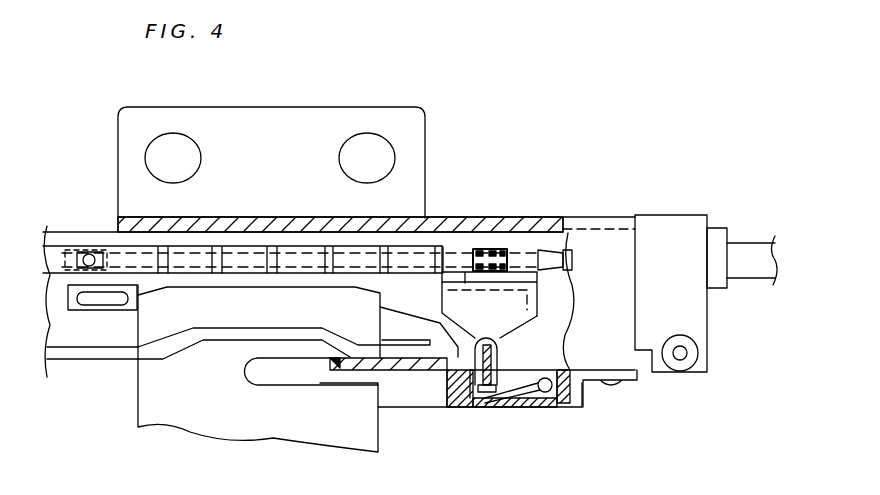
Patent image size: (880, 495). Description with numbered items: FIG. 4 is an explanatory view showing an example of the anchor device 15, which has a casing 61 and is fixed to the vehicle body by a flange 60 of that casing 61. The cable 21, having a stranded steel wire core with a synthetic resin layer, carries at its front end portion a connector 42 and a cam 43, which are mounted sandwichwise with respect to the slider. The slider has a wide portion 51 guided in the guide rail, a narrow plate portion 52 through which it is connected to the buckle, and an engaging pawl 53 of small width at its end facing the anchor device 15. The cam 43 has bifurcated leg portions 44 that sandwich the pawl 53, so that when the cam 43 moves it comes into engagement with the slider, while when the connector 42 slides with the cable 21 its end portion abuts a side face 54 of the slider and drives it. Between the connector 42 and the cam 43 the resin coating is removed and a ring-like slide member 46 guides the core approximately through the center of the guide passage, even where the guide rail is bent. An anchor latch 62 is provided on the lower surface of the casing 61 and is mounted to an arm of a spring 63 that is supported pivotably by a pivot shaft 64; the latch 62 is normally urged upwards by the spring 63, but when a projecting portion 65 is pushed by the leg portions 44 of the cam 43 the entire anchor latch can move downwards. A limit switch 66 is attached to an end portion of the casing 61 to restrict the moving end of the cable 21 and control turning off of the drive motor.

The anchor device 15 is at (461, 172).
The cable 21 is at (568, 262).
The connector 42 is at (62, 290).
The cam 43 is at (463, 257).
The bifurcated leg portions 44 is at (528, 334).
The ring-like slide member 46 is at (295, 250).
The wide portion 51 is at (168, 318).
The narrow plate portion 52 is at (200, 408).
The engaging pawl 53 is at (413, 333).
The side face 54 is at (133, 328).
The flange 60 is at (320, 118).
The casing 61 is at (437, 217).
The anchor latch 62 is at (462, 408).
The spring 63 is at (520, 398).
The pivot shaft 64 is at (548, 392).
The projecting portion 65 is at (452, 380).
The limit switch 66 is at (683, 240).